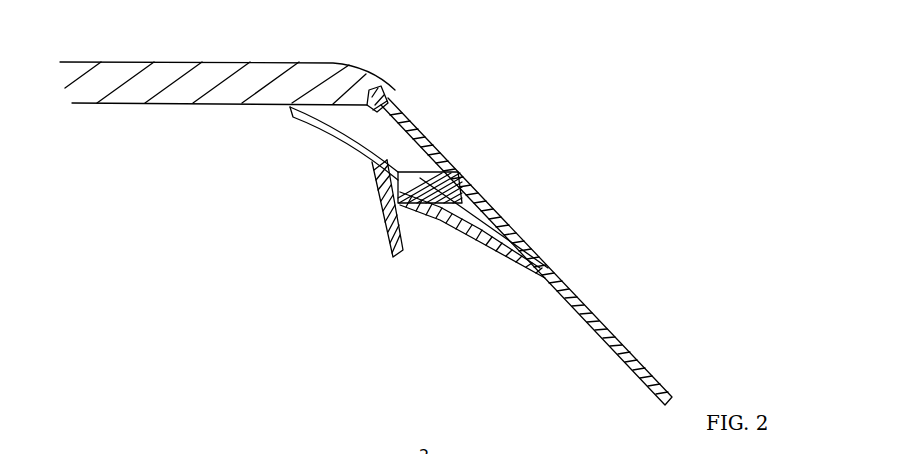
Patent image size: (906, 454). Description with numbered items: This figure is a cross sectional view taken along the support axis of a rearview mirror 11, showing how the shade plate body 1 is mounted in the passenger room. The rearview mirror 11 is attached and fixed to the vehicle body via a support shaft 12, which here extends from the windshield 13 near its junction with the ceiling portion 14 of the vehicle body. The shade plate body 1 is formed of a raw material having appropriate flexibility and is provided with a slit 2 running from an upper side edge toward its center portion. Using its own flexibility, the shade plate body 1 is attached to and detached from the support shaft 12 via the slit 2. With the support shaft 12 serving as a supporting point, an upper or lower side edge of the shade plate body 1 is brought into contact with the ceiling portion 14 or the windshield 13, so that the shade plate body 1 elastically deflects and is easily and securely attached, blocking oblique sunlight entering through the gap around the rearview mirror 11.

The ceiling portion 14 is at (258, 72).
The slit 2 is at (315, 125).
The rearview mirror 11 is at (388, 237).
The support shaft 12 is at (410, 203).
The shade plate body 1 is at (480, 250).
The windshield 13 is at (560, 270).